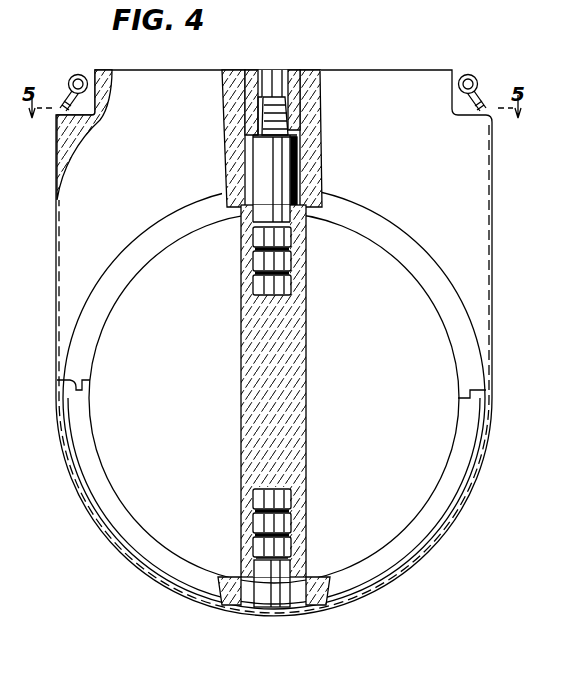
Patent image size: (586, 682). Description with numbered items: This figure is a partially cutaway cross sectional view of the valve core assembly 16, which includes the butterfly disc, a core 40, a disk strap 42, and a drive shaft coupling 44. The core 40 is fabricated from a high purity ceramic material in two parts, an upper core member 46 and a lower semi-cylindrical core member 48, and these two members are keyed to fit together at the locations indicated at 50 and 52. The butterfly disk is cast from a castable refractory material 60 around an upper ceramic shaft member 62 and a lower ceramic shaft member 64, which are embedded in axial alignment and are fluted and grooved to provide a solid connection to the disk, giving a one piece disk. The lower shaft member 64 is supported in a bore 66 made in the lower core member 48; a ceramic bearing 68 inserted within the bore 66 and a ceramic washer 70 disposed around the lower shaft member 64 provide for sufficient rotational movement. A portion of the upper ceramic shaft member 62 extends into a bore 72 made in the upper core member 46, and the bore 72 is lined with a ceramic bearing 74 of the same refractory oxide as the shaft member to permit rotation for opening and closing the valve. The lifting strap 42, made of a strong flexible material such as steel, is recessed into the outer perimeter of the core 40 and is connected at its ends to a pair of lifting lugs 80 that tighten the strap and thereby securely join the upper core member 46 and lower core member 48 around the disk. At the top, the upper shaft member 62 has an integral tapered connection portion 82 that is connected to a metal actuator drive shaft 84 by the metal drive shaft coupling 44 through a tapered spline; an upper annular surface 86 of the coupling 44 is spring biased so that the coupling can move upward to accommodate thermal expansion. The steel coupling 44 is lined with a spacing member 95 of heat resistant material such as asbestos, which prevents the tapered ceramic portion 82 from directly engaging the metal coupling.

The valve core assembly 16 is at (450, 55).
The disk strap 42 is at (493, 225).
The upper core member 46 is at (471, 370).
The lower semi-cylindrical core member 48 is at (466, 472).
The key fit 50 is at (60, 380).
The key fit 52 is at (464, 382).
The drive shaft coupling 44 is at (296, 102).
The metal actuator drive shaft 84 is at (272, 84).
The tapered connection portion 82 is at (257, 116).
The upper annular surface 86 is at (293, 95).
The spacing member 95 is at (287, 112).
The bore 72 is at (298, 133).
The ceramic bearing 74 is at (294, 177).
The castable refractory material 60 is at (286, 430).
The upper ceramic shaft member 62 is at (280, 262).
The lower ceramic shaft member 64 is at (276, 523).
The ceramic washer 70 is at (312, 582).
The bore 66 is at (252, 613).
The ceramic bearing 68 is at (300, 610).
The lifting lugs 80 is at (78, 74).
The core 40 is at (567, 665).